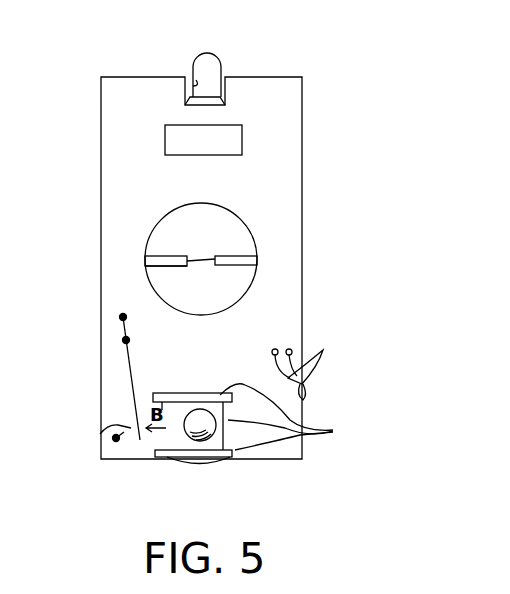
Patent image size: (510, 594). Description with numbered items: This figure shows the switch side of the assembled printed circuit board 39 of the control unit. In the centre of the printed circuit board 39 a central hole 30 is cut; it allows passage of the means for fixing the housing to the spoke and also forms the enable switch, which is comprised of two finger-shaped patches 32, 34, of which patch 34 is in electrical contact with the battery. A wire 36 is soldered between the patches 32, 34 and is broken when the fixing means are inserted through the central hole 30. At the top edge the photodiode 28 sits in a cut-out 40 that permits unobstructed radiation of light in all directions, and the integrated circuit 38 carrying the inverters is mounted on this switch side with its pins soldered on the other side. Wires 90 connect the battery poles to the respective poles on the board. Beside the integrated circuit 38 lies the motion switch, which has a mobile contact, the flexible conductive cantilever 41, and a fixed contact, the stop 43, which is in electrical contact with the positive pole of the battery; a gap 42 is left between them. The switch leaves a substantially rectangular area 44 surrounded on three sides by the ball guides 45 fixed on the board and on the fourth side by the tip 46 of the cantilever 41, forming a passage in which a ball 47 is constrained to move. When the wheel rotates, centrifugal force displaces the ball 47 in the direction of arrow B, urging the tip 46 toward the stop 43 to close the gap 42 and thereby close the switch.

The photodiode 28 is at (217, 73).
The cut-out 40 is at (196, 80).
The integrated circuit 38 is at (256, 149).
The printed circuit board 39 is at (113, 198).
The central hole 30 is at (247, 242).
The finger-shaped patch 34 is at (172, 258).
The wire 36 is at (200, 266).
The finger-shaped patch 32 is at (240, 265).
The cantilever 41 is at (131, 378).
The tip 46 is at (137, 401).
The gap 42 is at (100, 434).
The stop 43 is at (108, 443).
The rectangular area 44 is at (160, 443).
The ball 47 is at (188, 437).
The wires 90 is at (321, 352).
The ball guides 45 is at (333, 430).